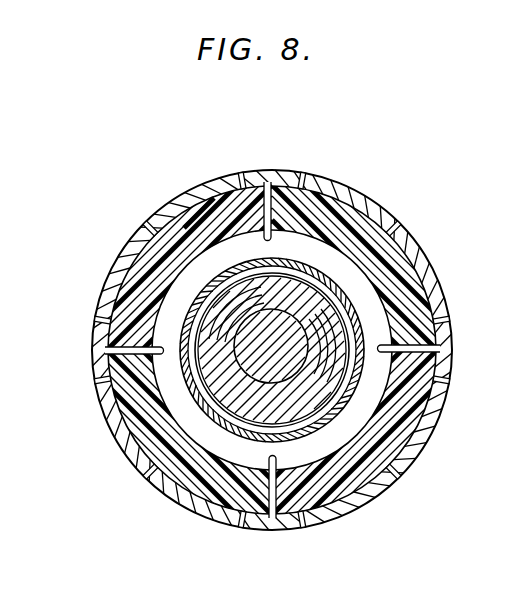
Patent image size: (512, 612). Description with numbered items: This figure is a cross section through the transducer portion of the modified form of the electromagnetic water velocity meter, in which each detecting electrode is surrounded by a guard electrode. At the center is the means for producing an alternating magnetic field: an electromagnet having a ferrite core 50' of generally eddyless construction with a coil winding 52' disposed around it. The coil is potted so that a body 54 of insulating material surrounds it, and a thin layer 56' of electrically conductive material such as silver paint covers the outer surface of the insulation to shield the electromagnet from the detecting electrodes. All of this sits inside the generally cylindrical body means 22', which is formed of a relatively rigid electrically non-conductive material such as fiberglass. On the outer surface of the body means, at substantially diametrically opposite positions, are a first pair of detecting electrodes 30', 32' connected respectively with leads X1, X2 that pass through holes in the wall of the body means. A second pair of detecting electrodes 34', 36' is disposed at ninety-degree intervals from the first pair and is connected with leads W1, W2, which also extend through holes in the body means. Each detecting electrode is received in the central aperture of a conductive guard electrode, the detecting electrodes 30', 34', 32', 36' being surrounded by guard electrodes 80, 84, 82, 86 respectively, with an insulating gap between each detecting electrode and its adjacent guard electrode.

The body means 22' is at (185, 193).
The detecting electrode 30' is at (95, 350).
The detecting electrode 32' is at (443, 350).
The detecting electrode 34' is at (271, 156).
The detecting electrode 36' is at (271, 546).
The core 50' is at (284, 354).
The coil winding 52' is at (272, 367).
The body of insulating material 54 is at (202, 380).
The layer of electrically conductive material 56' is at (311, 346).
The guard electrode 80 is at (123, 432).
The guard electrode 82 is at (427, 277).
The guard electrode 84 is at (353, 195).
The guard electrode 86 is at (207, 520).
The lead W1 is at (272, 240).
The lead W2 is at (276, 457).
The lead X1 is at (165, 348).
The lead X2 is at (376, 348).